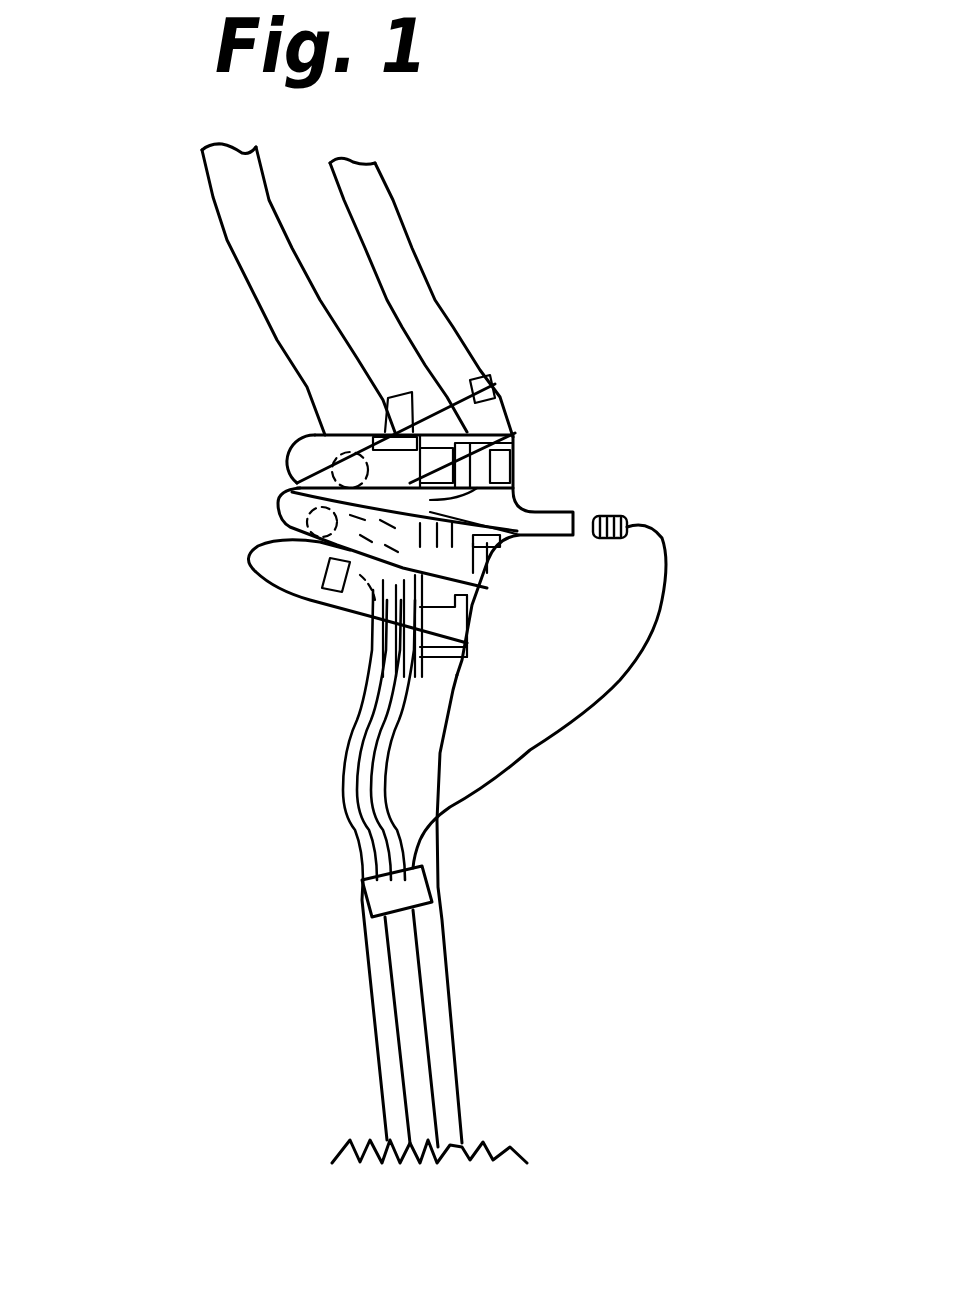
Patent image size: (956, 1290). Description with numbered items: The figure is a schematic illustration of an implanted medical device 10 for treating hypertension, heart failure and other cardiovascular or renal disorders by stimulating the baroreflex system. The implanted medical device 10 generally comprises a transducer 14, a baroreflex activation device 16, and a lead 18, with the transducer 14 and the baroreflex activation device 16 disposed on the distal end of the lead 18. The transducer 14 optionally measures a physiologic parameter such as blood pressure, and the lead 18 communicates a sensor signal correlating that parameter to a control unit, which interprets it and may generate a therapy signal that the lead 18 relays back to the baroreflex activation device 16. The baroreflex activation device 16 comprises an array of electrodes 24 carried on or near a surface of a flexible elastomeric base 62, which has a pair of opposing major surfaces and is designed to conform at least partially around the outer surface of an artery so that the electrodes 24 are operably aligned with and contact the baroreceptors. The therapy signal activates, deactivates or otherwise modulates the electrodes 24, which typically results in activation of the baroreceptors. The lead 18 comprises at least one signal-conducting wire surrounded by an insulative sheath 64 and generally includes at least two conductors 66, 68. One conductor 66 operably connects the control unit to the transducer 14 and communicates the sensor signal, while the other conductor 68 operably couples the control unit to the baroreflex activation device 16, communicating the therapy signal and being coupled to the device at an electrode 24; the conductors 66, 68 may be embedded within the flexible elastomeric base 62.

The implanted medical device 10 is at (172, 737).
The transducer 14 is at (605, 516).
The baroreflex activation device 16 is at (265, 502).
The lead 18 is at (377, 975).
The electrodes 24 is at (493, 387).
The flexible elastomeric base 62 is at (307, 450).
The insulative sheath 64 is at (423, 940).
The conductor 66 is at (668, 592).
The conductor 68 is at (430, 717).